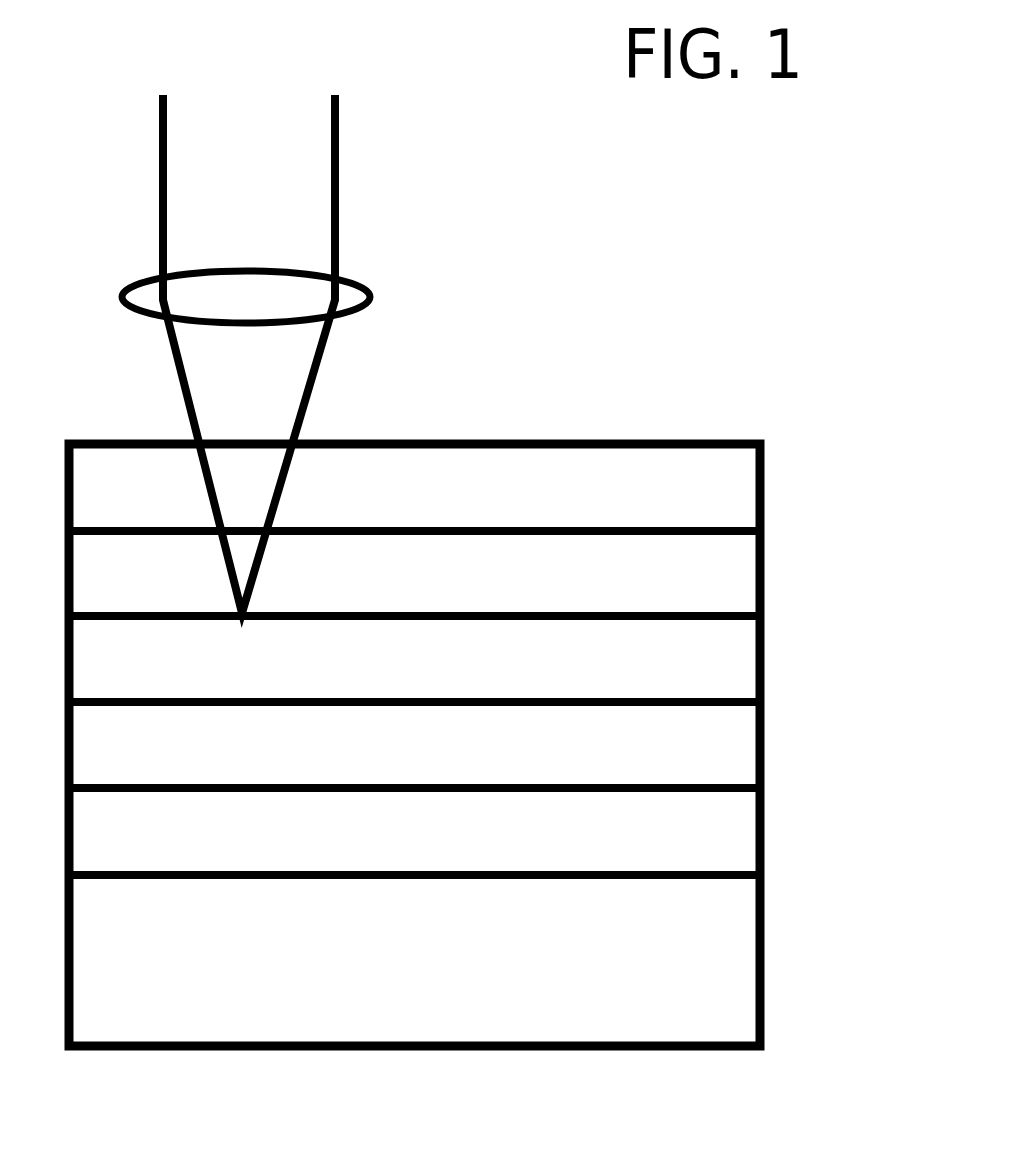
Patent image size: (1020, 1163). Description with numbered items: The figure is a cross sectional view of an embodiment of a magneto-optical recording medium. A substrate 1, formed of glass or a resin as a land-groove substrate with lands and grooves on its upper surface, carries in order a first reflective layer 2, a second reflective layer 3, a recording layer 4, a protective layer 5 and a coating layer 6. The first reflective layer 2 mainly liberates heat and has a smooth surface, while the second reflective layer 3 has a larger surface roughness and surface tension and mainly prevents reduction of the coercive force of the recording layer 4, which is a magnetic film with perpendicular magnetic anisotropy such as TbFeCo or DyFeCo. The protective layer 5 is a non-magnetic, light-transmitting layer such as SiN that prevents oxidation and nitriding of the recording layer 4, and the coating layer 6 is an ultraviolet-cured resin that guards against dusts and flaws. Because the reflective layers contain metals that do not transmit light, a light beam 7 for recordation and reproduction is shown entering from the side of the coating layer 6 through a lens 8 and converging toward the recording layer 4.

The substrate 1 is at (725, 987).
The first reflective layer 2 is at (725, 850).
The second reflective layer 3 is at (725, 755).
The recording layer 4 is at (725, 678).
The protective layer 5 is at (725, 592).
The coating layer 6 is at (725, 490).
The light beam 7 is at (315, 202).
The lens 8 is at (350, 297).